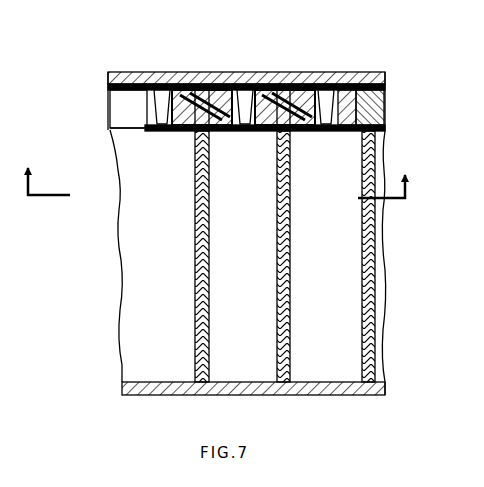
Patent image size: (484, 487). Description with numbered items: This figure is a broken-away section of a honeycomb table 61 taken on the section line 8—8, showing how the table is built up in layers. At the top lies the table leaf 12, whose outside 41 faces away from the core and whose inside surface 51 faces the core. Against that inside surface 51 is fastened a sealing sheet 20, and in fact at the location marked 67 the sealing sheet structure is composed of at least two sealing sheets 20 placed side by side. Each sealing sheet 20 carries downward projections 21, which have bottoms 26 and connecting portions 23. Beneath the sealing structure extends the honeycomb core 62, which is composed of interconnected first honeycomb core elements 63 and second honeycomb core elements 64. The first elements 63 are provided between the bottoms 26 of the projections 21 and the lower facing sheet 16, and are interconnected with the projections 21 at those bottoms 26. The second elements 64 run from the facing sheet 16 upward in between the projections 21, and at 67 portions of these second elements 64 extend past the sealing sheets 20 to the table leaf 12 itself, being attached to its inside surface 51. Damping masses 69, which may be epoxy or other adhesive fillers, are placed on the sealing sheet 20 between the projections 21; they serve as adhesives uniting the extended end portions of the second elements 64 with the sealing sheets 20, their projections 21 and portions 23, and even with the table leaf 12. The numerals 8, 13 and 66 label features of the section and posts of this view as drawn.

The section line 8- 8 is at (215, 171).
The table leaf 12 is at (368, 73).
The posts 13 is at (242, 74).
The facing sheet 16 is at (150, 395).
The sealing sheet 20 is at (110, 101).
The projections 21 is at (145, 112).
The portions 23 is at (295, 72).
The bottoms 26 is at (150, 140).
The outside 41 is at (135, 73).
The inside surface 51 is at (358, 72).
The honeycomb table 61 is at (100, 68).
The honeycomb core 62 is at (118, 291).
The first honeycomb core elements 63 is at (168, 326).
The second honeycomb core elements 64 is at (195, 252).
The wall lining 66 is at (138, 354).
The extension of second core elements past sealing sheet 67 is at (196, 74).
The damping masses 69 is at (183, 131).